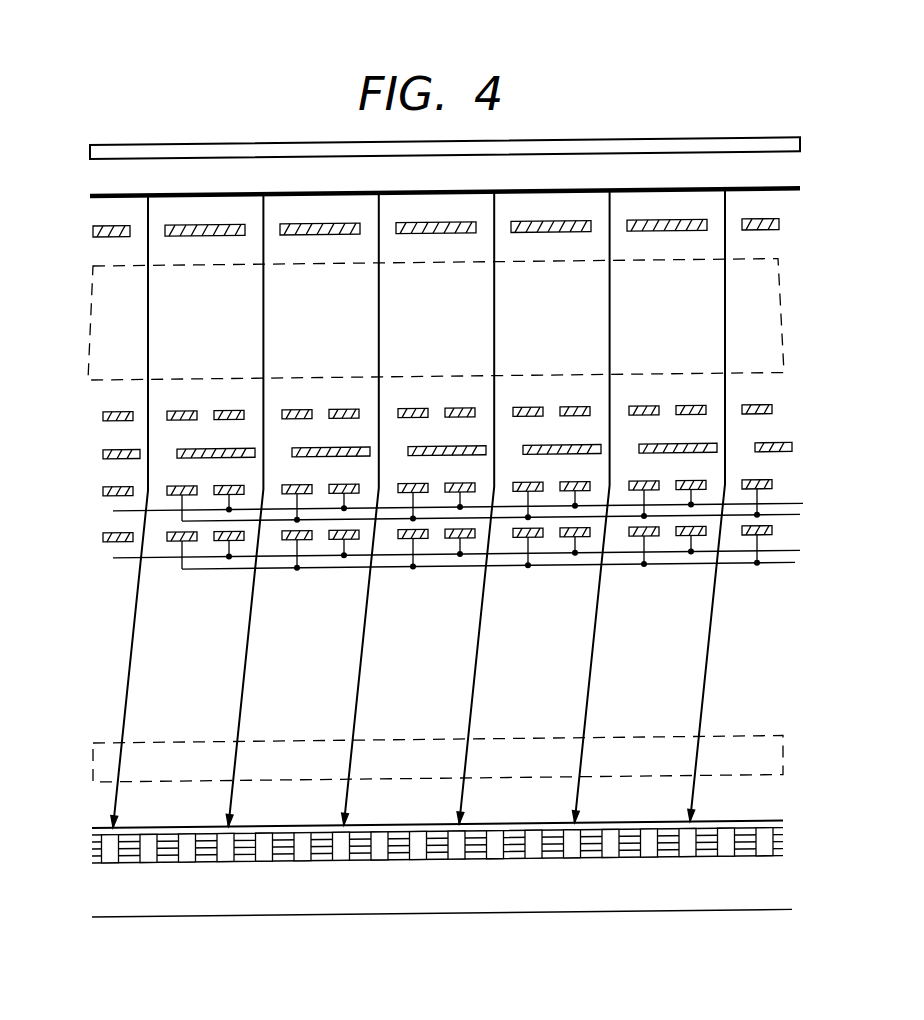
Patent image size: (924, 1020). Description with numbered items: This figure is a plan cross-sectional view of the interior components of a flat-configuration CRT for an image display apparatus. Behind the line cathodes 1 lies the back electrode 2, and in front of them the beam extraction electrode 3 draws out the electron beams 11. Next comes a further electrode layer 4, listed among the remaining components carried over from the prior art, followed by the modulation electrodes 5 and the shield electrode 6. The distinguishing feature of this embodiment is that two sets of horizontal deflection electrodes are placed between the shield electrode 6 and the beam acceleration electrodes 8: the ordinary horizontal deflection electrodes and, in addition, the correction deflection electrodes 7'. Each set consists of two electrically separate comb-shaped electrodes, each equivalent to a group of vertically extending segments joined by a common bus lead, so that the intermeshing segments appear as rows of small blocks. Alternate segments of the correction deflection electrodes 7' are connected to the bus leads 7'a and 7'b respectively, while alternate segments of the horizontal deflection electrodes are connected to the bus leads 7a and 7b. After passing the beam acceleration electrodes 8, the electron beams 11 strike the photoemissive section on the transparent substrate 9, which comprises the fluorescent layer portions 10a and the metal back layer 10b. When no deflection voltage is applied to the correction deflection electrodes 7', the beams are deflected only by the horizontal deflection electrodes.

The line cathodes 1 is at (802, 200).
The back electrode 2 is at (802, 156).
The beam extraction electrode 3 is at (782, 235).
The first liquid crystal layer 4 is at (784, 289).
The modulation electrodes 5 is at (774, 417).
The shield electrode 6 is at (796, 457).
The correction deflection electrodes 7' is at (464, 497).
The bus lead 7'a is at (494, 509).
The bus lead 7'b is at (531, 531).
The bus lead 7a is at (800, 559).
The bus lead 7b is at (795, 577).
The beam acceleration electrodes 8 is at (785, 757).
The transparent substrate 9 is at (783, 882).
The fluorescent layer portions 10a is at (787, 842).
The metal back layer 10b is at (772, 830).
The electron beams 11 is at (712, 628).